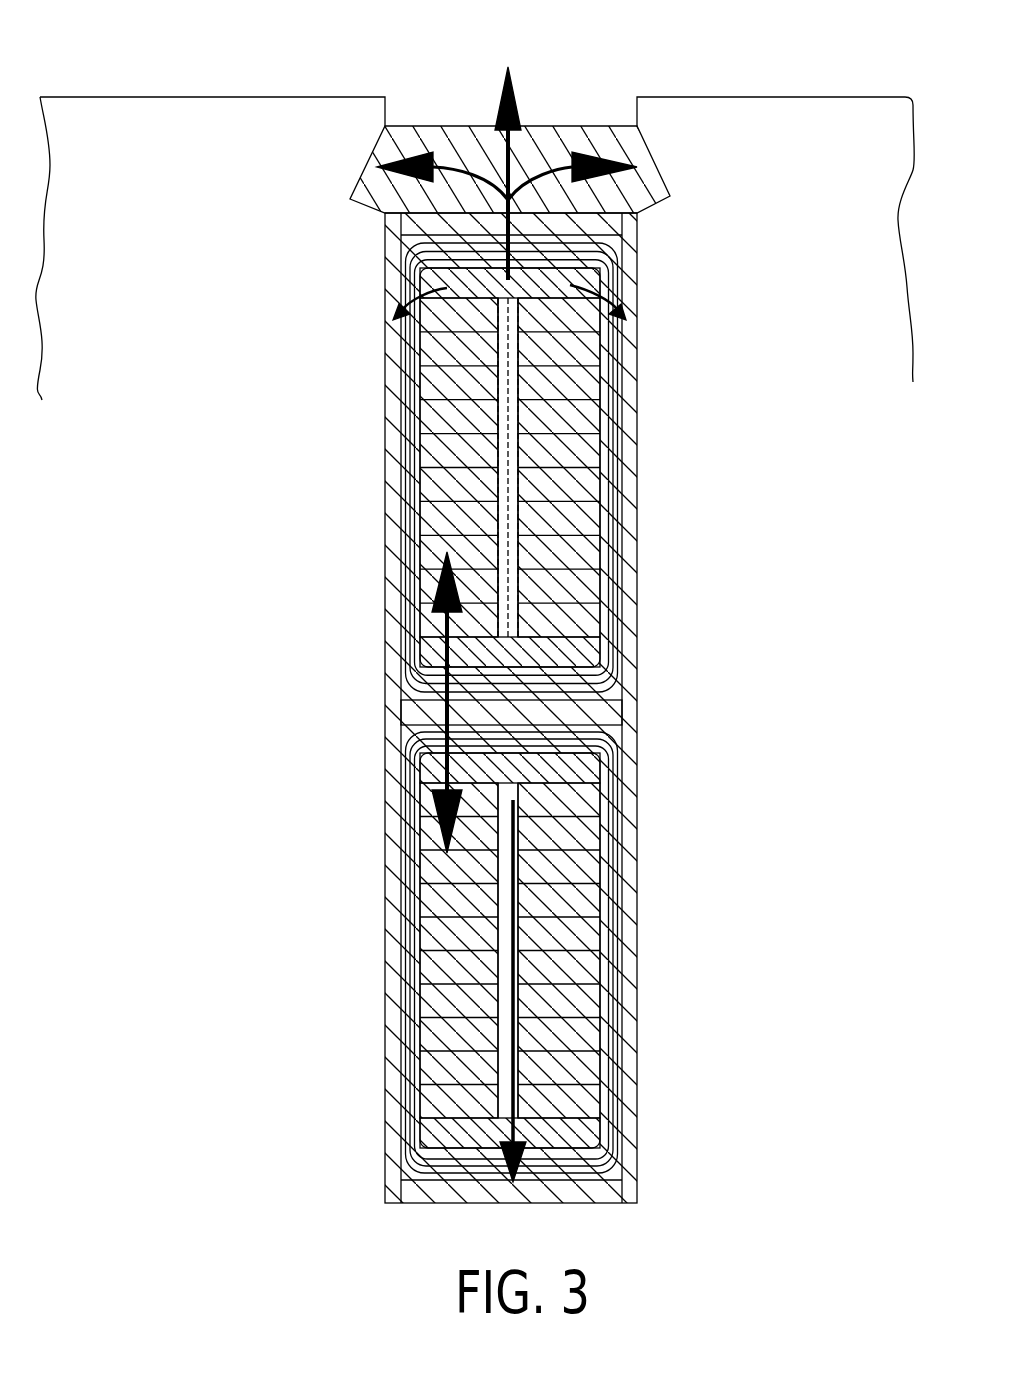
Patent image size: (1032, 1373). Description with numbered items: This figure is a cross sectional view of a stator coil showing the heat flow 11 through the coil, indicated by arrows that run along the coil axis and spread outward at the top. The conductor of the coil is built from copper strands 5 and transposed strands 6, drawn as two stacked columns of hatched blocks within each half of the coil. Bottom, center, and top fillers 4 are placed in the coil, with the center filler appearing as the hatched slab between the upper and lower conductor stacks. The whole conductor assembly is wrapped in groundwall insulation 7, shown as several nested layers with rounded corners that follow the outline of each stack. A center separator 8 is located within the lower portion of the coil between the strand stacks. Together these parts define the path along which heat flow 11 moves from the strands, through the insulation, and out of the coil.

The fillers 4 is at (603, 713).
The copper strands 5 is at (453, 458).
The transposed strands 6 is at (597, 368).
The groundwall insulation 7 is at (383, 280).
The center separator 8 is at (577, 985).
The heat flow 11 is at (467, 172).